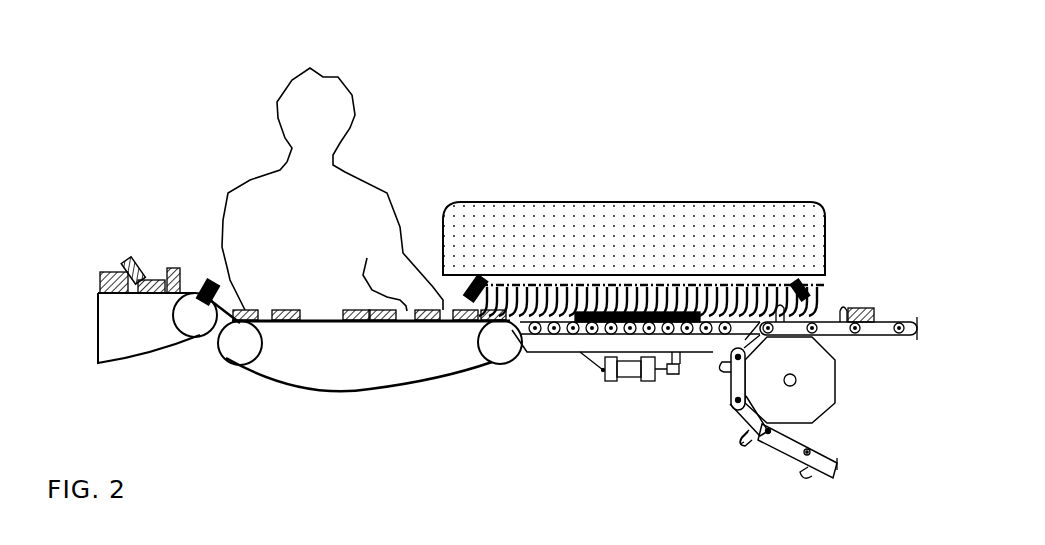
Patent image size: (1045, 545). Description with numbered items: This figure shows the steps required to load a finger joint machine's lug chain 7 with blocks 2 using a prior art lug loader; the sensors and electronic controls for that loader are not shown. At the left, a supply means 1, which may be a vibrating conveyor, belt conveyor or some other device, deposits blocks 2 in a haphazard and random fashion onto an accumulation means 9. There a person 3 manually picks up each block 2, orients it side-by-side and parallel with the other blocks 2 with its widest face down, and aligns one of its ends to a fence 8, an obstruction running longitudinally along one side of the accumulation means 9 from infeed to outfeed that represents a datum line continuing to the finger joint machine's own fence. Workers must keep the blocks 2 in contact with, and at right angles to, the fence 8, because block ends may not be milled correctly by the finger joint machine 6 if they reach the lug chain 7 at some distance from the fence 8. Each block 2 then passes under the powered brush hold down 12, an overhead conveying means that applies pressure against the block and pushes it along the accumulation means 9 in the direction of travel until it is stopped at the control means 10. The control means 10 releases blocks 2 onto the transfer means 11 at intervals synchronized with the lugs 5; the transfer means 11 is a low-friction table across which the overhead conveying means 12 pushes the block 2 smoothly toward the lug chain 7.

The supply means 1 is at (126, 337).
The block 2 is at (126, 262).
The person 3 is at (308, 235).
The lug 5 is at (743, 443).
The finger joint machine 6 is at (892, 418).
The lug chain 7 is at (906, 320).
The fence 8 is at (318, 306).
The accumulation means 9 is at (362, 371).
The control means 10 is at (743, 330).
The transfer means 11 is at (733, 337).
The powered brush hold down 12 is at (635, 198).